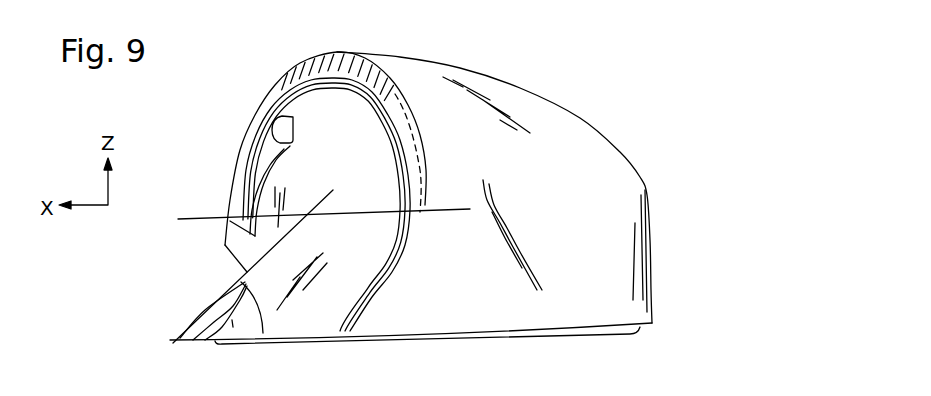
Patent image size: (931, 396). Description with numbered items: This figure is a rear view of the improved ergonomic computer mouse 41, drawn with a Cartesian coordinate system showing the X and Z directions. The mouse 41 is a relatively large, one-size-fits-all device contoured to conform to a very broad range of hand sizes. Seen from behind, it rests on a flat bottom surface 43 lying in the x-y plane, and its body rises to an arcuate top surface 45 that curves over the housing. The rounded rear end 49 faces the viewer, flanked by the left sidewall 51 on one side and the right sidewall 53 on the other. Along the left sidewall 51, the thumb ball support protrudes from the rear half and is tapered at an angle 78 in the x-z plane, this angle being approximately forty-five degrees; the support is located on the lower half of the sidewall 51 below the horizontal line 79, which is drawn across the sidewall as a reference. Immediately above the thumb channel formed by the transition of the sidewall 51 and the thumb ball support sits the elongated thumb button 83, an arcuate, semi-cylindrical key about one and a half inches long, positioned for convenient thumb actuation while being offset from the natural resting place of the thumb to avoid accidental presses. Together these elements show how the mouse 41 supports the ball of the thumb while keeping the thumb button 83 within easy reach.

The ergonomic computer mouse 41 is at (275, 41).
The arcuate top surface 45 is at (415, 70).
The left sidewall 51 is at (275, 112).
The thumb button 83 is at (253, 163).
The horizontal line 79 is at (344, 212).
The angle 78 is at (253, 266).
The flat bottom surface 43 is at (384, 342).
The rounded rear end 49 is at (488, 297).
The right sidewall 53 is at (653, 257).